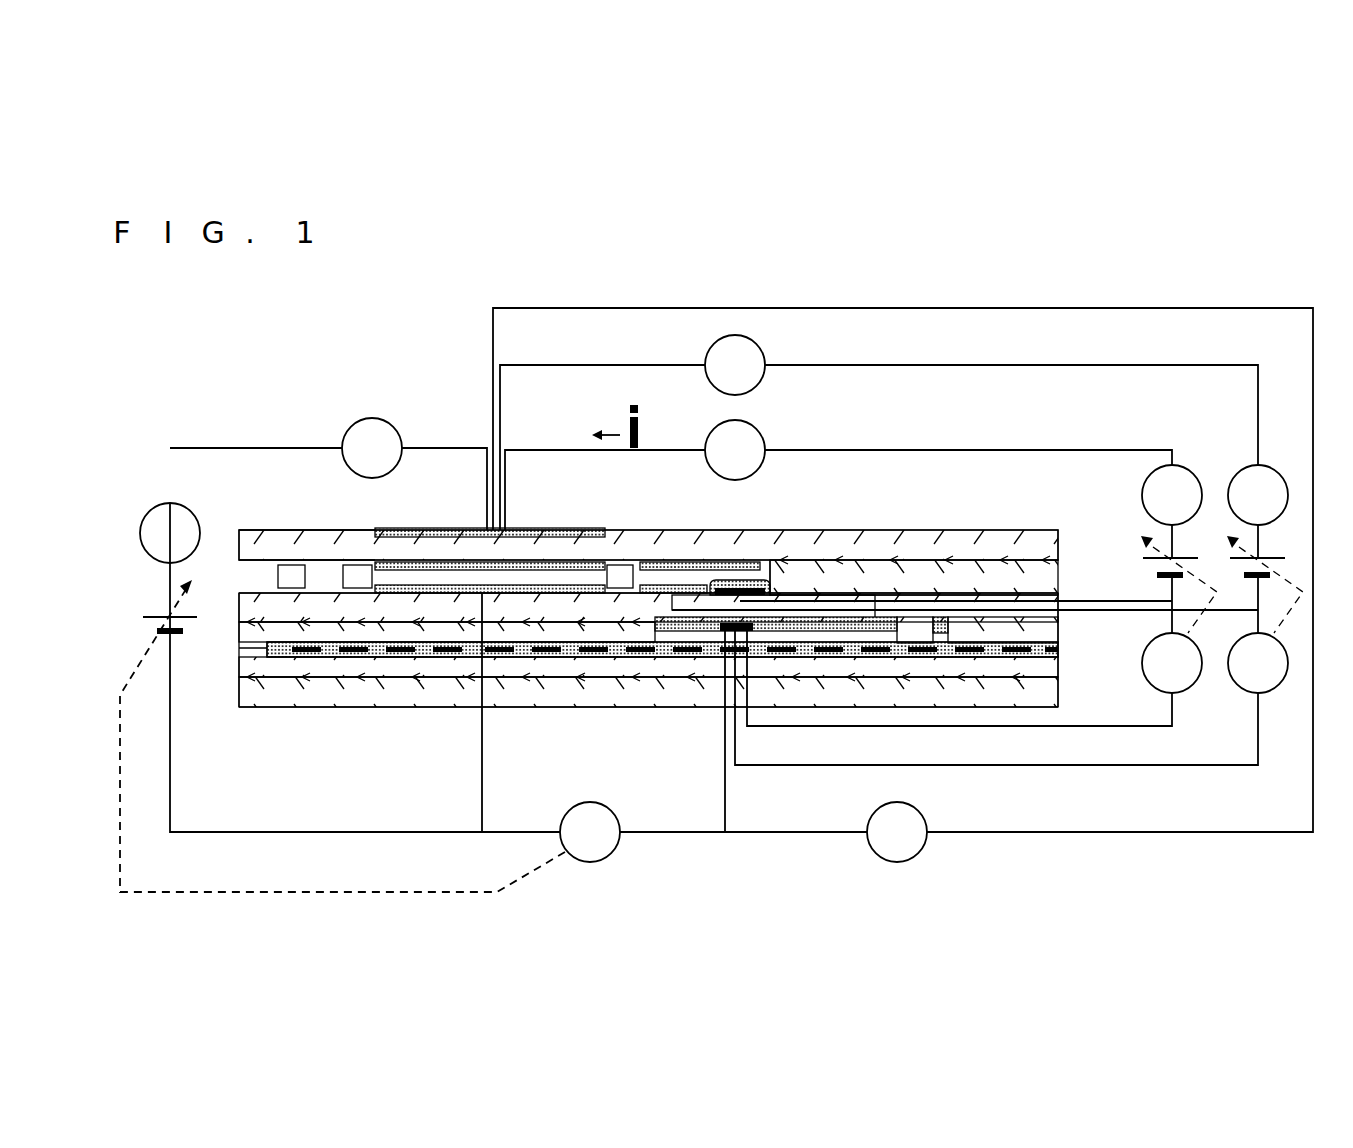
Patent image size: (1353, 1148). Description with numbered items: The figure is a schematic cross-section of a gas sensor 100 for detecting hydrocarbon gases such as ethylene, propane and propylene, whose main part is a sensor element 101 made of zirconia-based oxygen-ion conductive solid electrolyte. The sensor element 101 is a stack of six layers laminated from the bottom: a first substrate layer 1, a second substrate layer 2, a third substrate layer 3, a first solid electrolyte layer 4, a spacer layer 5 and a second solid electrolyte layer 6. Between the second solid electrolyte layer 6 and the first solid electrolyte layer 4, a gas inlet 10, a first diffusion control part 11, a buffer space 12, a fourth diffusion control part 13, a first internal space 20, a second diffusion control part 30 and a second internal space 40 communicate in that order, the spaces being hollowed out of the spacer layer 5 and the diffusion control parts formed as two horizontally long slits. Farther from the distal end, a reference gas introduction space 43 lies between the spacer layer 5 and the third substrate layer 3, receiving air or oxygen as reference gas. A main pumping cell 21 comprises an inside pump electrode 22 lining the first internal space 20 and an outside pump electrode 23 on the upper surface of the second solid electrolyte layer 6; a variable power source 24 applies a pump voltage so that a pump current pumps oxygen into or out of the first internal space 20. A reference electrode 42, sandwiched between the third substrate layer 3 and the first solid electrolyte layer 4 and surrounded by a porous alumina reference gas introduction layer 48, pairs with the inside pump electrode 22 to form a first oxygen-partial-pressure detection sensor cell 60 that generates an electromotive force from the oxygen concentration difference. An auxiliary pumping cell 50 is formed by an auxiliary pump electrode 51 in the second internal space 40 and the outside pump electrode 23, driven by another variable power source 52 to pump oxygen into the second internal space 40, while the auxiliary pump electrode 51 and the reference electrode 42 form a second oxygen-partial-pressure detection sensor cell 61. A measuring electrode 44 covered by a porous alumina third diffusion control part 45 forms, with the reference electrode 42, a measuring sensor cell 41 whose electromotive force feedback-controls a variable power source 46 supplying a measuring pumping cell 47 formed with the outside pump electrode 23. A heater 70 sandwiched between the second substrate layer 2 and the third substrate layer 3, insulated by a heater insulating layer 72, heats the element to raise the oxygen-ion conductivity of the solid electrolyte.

The gas sensor 100 is at (197, 363).
The sensor element 101 is at (835, 531).
The first substrate layer 1 is at (250, 698).
The second substrate layer 2 is at (250, 668).
The third substrate layer 3 is at (250, 637).
The first solid electrolyte layer 4 is at (250, 605).
The spacer layer 5 is at (1058, 578).
The second solid electrolyte layer 6 is at (1058, 547).
The gas inlet 10 is at (250, 552).
The first diffusion control part 11 is at (290, 578).
The buffer space 12 is at (323, 578).
The fourth diffusion control part 13 is at (357, 578).
The first internal space 20 is at (400, 565).
The main pumping cell 21 is at (598, 548).
The inside pump electrode 22 is at (442, 588).
The outside pump electrode 23 is at (537, 530).
The variable power source 24 is at (152, 617).
The second diffusion control part 30 is at (620, 578).
The second internal space 40 is at (690, 588).
The measuring sensor cell 41 is at (727, 602).
The reference electrode 42 is at (722, 628).
The reference gas introduction space 43 is at (1050, 618).
The measuring electrode 44 is at (752, 590).
The third diffusion control part 45 is at (733, 581).
The variable power source 46 is at (1178, 562).
The measuring pumping cell 47 is at (780, 548).
The reference gas introduction layer 48 is at (838, 632).
The auxiliary pumping cell 50 is at (645, 548).
The auxiliary pump electrode 51 is at (660, 565).
The variable power source 52 is at (1264, 562).
The first oxygen-partial-pressure detection sensor cell 60 is at (608, 608).
The second oxygen-partial-pressure detection sensor cell 61 is at (647, 608).
The heater 70 is at (310, 652).
The heater insulating layer 72 is at (275, 657).